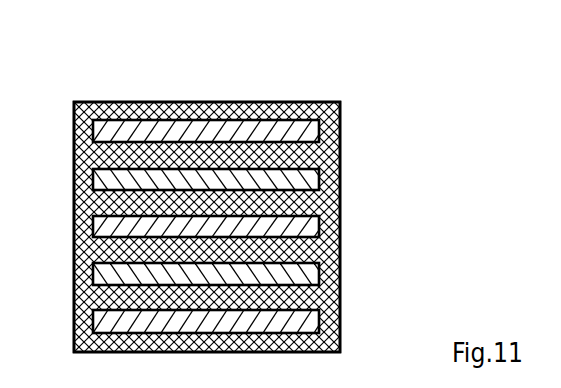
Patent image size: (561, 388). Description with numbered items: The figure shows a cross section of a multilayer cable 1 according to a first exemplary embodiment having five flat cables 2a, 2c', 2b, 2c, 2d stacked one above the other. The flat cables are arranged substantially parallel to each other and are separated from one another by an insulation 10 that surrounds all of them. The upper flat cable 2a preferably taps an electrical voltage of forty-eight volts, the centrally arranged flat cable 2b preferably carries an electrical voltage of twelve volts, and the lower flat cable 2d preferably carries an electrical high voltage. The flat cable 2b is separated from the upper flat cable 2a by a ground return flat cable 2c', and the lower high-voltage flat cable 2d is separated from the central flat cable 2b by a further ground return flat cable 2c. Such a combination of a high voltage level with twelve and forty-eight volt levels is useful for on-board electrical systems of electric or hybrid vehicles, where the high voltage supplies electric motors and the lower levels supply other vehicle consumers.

The multilayer cable 1 is at (318, 84).
The insulation 10 is at (85, 157).
The flat cable 2a is at (308, 131).
The ground return flat cable 2c' is at (250, 173).
The flat cable 2b is at (302, 227).
The ground return flat cable 2c is at (247, 272).
The flat cable 2d is at (305, 322).